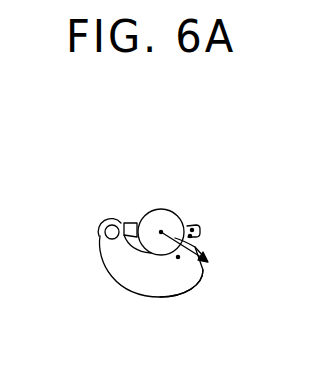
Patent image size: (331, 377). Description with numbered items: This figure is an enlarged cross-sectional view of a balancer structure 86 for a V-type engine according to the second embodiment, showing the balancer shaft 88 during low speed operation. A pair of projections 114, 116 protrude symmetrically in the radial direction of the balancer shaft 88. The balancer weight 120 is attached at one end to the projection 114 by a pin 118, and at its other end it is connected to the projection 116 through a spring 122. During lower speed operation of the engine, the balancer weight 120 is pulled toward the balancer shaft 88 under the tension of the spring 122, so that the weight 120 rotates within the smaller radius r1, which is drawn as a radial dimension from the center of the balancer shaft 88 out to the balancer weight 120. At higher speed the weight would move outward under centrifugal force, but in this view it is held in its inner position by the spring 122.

The lever assembly 86 is at (171, 208).
The balancer shaft 88 is at (159, 216).
The projection 114 is at (127, 220).
The projection 116 is at (202, 226).
The pin 118 is at (104, 232).
The balancer weight 120 is at (160, 288).
The spring 122 is at (200, 240).
The smaller radius r1 is at (206, 262).